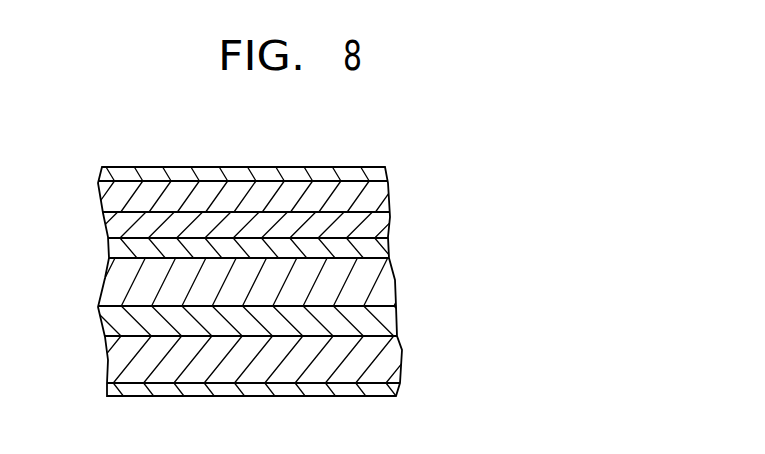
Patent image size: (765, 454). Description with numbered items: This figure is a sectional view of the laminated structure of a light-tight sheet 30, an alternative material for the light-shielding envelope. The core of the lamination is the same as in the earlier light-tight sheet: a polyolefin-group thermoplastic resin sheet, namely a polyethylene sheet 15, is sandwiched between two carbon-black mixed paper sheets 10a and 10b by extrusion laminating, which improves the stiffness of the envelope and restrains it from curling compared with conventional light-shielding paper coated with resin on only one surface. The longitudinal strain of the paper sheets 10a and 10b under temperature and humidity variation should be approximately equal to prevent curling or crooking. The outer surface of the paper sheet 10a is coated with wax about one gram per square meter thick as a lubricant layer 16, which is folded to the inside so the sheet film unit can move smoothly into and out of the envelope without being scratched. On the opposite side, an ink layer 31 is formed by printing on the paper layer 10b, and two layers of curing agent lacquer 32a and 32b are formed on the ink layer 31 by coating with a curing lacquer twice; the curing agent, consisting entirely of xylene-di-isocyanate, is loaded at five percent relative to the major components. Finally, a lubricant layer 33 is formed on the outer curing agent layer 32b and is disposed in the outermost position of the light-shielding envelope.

The light-tight sheet 30 is at (240, 140).
The lubricant layer 33 is at (389, 171).
The curing agent lacquer layer 32b is at (390, 199).
The curing agent lacquer layer 32a is at (384, 224).
The ink layer 31 is at (388, 247).
The carbon-black mixed paper sheet 10b is at (391, 281).
The polyethylene sheet 15 is at (393, 320).
The carbon-black mixed paper sheet 10a is at (399, 350).
The lubricant layer 16 is at (399, 387).